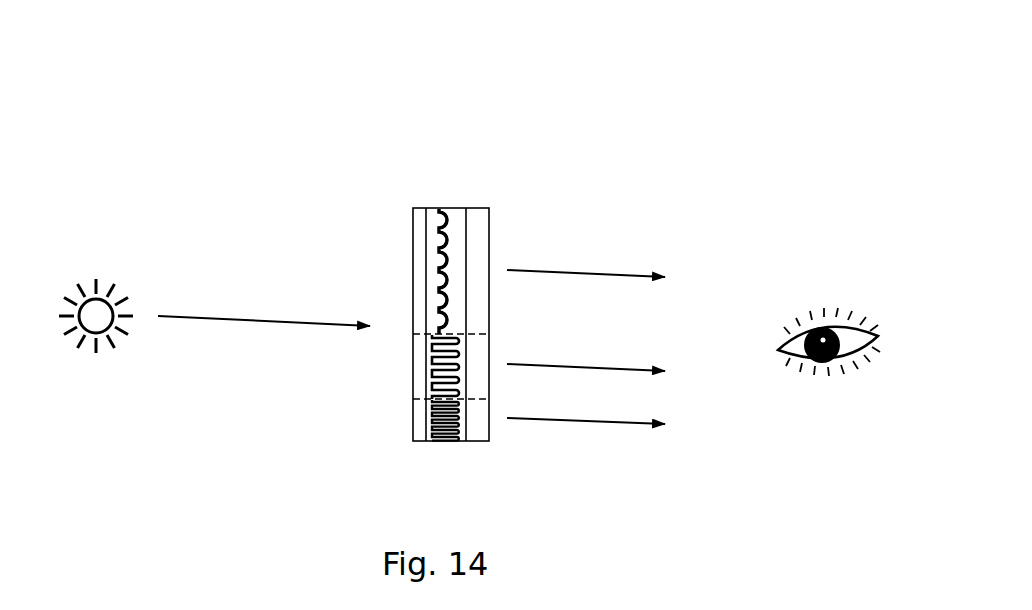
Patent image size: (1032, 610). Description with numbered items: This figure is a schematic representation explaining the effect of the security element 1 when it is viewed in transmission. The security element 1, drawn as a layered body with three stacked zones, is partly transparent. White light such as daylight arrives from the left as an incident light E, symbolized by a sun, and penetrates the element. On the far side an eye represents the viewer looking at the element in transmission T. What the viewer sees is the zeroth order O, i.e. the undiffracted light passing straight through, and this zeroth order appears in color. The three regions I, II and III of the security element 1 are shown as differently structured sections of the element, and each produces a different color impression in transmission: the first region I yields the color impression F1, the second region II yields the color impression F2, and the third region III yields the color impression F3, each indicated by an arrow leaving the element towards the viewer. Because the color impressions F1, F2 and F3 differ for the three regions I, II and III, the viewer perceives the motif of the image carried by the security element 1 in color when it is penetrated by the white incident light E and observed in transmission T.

The security element 1 is at (420, 168).
The first region I is at (414, 294).
The second region II is at (414, 356).
The third region III is at (414, 425).
The incident light E is at (264, 302).
The color impression F1 is at (586, 250).
The color impression F2 is at (586, 347).
The color impression F3 is at (586, 446).
The transmission T is at (690, 355).
The zeroth order O is at (552, 156).